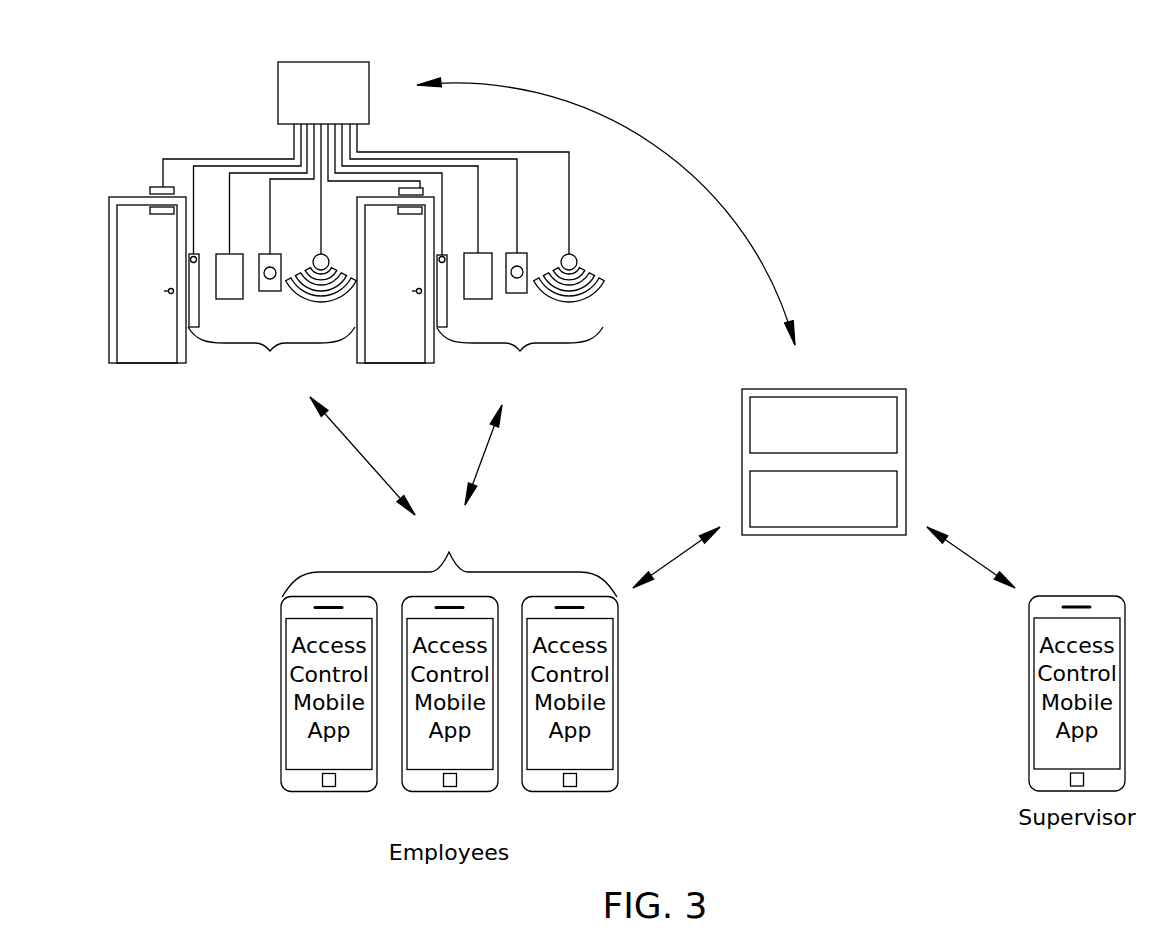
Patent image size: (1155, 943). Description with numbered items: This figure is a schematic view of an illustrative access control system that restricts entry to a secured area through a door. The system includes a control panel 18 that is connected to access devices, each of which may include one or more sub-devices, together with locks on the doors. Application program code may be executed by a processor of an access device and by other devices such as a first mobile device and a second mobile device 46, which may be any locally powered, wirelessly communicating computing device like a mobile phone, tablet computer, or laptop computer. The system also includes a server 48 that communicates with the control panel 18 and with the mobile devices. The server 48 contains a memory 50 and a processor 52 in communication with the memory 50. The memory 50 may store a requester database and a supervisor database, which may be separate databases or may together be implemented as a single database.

The control panel 18 is at (323, 62).
The second mobile device 46 is at (1079, 596).
The server 48 is at (850, 441).
The memory 50 is at (897, 497).
The processor 52 is at (897, 426).